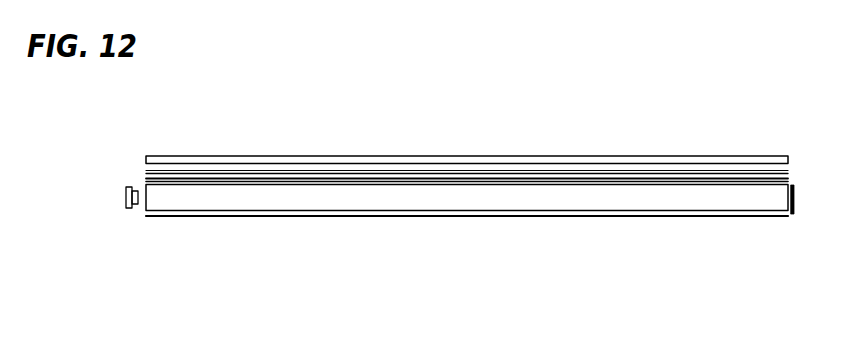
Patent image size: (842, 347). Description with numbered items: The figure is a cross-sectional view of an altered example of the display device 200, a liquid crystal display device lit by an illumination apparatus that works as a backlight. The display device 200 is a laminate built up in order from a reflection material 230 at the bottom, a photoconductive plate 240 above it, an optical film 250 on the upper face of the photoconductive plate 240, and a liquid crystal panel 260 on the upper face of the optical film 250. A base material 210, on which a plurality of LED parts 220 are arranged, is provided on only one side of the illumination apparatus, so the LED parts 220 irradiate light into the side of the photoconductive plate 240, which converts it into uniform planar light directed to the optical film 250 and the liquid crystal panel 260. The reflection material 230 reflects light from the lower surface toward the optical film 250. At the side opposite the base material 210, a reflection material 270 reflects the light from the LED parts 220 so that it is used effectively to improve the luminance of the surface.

The display device 200 is at (538, 256).
The base material 210 is at (127, 187).
The LED parts 220 is at (133, 208).
The reflection material 230 is at (335, 216).
The photoconductive plate 240 is at (733, 198).
The optical film 250 is at (529, 161).
The liquid crystal panel 260 is at (332, 161).
The reflection material 270 is at (795, 205).